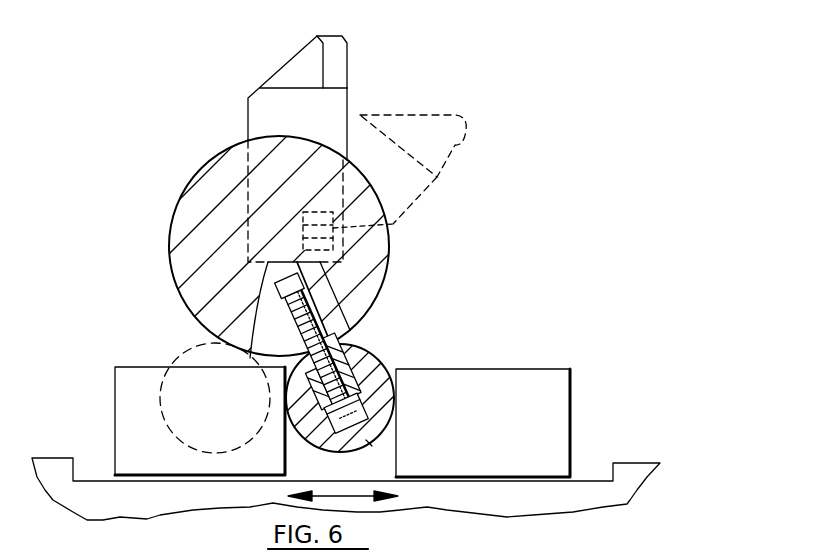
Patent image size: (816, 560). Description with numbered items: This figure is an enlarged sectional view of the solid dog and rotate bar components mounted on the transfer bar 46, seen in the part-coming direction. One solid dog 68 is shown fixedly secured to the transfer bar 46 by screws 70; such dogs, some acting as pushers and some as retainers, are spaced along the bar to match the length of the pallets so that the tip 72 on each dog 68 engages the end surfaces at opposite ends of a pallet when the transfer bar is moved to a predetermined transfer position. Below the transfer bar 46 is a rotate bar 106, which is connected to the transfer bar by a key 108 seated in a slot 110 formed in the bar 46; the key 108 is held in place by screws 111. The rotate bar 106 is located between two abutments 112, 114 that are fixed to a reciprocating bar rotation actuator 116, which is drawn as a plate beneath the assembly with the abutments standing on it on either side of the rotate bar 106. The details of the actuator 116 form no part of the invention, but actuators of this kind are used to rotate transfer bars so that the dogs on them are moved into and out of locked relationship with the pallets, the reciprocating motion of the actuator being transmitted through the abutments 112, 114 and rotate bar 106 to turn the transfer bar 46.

The transfer bar 46 is at (193, 210).
The solid dog 68 is at (332, 108).
The screws 70 is at (393, 224).
The tip 72 is at (310, 53).
The rotate bar 106 is at (373, 360).
The key 108 is at (340, 360).
The slot 110 is at (340, 337).
The screws 111 is at (372, 443).
The abutment 112 is at (512, 390).
The abutment 114 is at (127, 393).
The reciprocating bar rotation actuator 116 is at (633, 470).